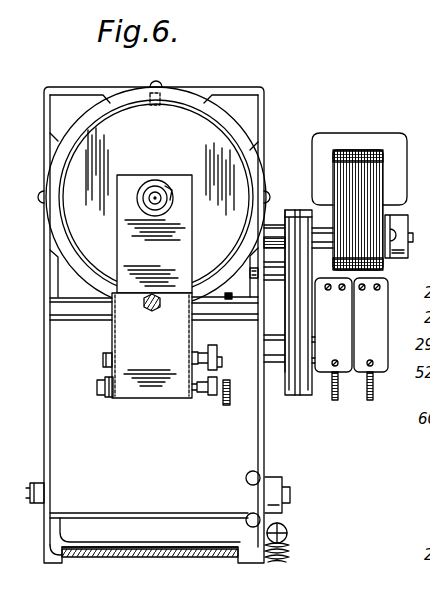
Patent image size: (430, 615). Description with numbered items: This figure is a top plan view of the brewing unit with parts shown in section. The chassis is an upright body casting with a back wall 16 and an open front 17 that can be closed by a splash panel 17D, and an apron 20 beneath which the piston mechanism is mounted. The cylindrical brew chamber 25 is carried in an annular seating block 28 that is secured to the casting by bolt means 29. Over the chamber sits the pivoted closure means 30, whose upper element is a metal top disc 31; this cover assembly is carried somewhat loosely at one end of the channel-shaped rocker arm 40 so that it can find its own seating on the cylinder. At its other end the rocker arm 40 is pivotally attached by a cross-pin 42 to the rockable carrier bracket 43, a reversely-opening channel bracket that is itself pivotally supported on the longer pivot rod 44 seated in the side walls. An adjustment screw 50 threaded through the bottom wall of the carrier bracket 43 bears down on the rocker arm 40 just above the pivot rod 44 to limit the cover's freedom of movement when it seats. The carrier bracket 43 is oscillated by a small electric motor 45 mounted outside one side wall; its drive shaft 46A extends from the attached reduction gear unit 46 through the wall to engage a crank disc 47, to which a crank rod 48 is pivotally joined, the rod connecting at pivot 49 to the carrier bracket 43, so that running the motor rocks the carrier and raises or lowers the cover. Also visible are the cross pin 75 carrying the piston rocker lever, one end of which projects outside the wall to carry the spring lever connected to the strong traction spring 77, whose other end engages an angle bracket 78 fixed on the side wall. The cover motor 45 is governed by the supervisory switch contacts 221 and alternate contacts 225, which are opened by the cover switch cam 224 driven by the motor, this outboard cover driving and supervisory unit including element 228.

The back wall 16 is at (100, 87).
The open front 17 is at (184, 549).
The splash panel 17D is at (210, 557).
The apron 20 is at (200, 471).
The brew chamber 25 is at (249, 160).
The annular seating block 28 is at (250, 172).
The bolt means 29 is at (156, 81).
The closure means 30 is at (183, 138).
The top disc 31 is at (182, 161).
The rocker arm 40 is at (143, 259).
The cross-pin 42 is at (103, 360).
The carrier bracket 43 is at (150, 350).
The pivot rod 44 is at (100, 313).
The electric motor 45 is at (355, 152).
The reduction gear unit 46 is at (306, 400).
The drive shaft 46A is at (273, 350).
The crank disc 47 is at (229, 398).
The crank rod 48 is at (215, 398).
The pivot connection 49 is at (207, 397).
The adjustment screw 50 is at (141, 301).
The cross pin 75 is at (291, 495).
The traction spring 77 is at (290, 556).
The angle bracket 78 is at (287, 530).
The cover supervisory switch contacts 221 is at (343, 335).
The cover switch cam 224 is at (339, 398).
The alternate contacts 225 is at (378, 335).
The supervisory unit element 228 is at (373, 398).